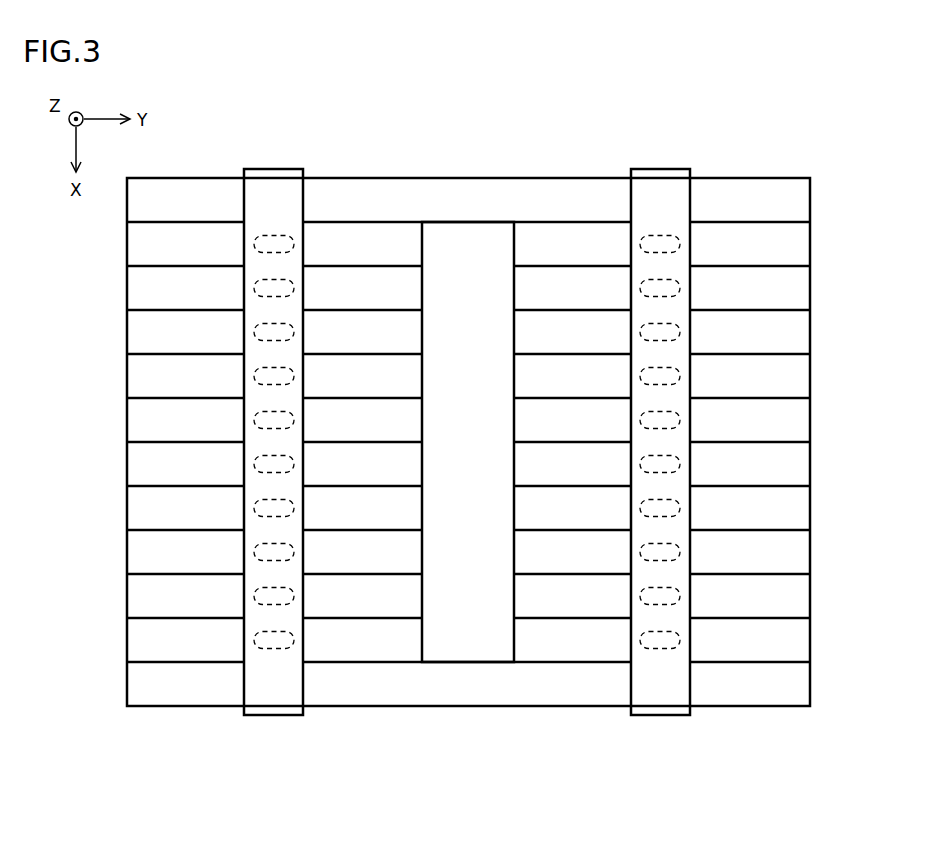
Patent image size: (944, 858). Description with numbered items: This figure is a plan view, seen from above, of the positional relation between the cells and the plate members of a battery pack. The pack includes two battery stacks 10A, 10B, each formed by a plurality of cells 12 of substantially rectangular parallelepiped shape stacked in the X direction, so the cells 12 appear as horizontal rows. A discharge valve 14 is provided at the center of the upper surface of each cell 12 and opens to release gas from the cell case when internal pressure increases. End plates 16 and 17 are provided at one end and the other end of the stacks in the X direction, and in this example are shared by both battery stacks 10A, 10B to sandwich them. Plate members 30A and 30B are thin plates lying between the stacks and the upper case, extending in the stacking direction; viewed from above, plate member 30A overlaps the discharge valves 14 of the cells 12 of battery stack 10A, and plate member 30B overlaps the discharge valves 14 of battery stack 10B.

The battery stack 10A is at (334, 748).
The battery stack 10B is at (607, 749).
The cell 12 is at (140, 245).
The discharge valve 14 is at (262, 236).
The end plate 16 is at (467, 193).
The end plate 17 is at (469, 692).
The plate member 30A is at (272, 168).
The plate member 30B is at (659, 168).